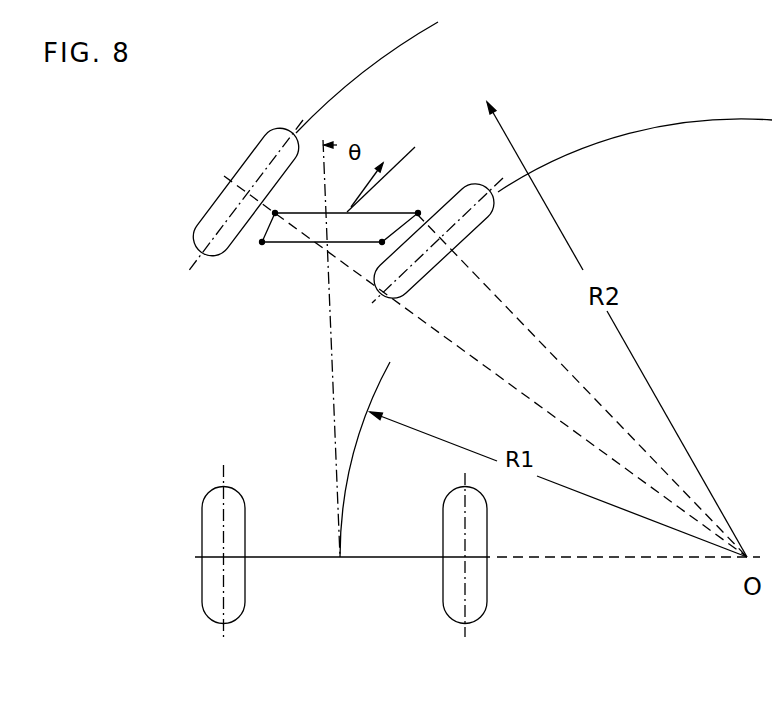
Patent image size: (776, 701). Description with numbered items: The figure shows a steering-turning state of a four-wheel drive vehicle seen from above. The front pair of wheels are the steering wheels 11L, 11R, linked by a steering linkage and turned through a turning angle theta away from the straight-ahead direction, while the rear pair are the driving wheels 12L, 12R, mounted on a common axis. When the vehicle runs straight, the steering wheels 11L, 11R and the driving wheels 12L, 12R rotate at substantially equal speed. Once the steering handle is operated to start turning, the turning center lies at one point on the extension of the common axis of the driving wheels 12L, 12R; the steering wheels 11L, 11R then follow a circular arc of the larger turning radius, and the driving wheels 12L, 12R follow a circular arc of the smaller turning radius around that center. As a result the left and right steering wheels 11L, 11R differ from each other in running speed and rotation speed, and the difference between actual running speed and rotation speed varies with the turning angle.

The steering wheel 11L is at (203, 222).
The steering wheel 11R is at (415, 288).
The driving wheel 12L is at (202, 578).
The driving wheel 12R is at (443, 590).